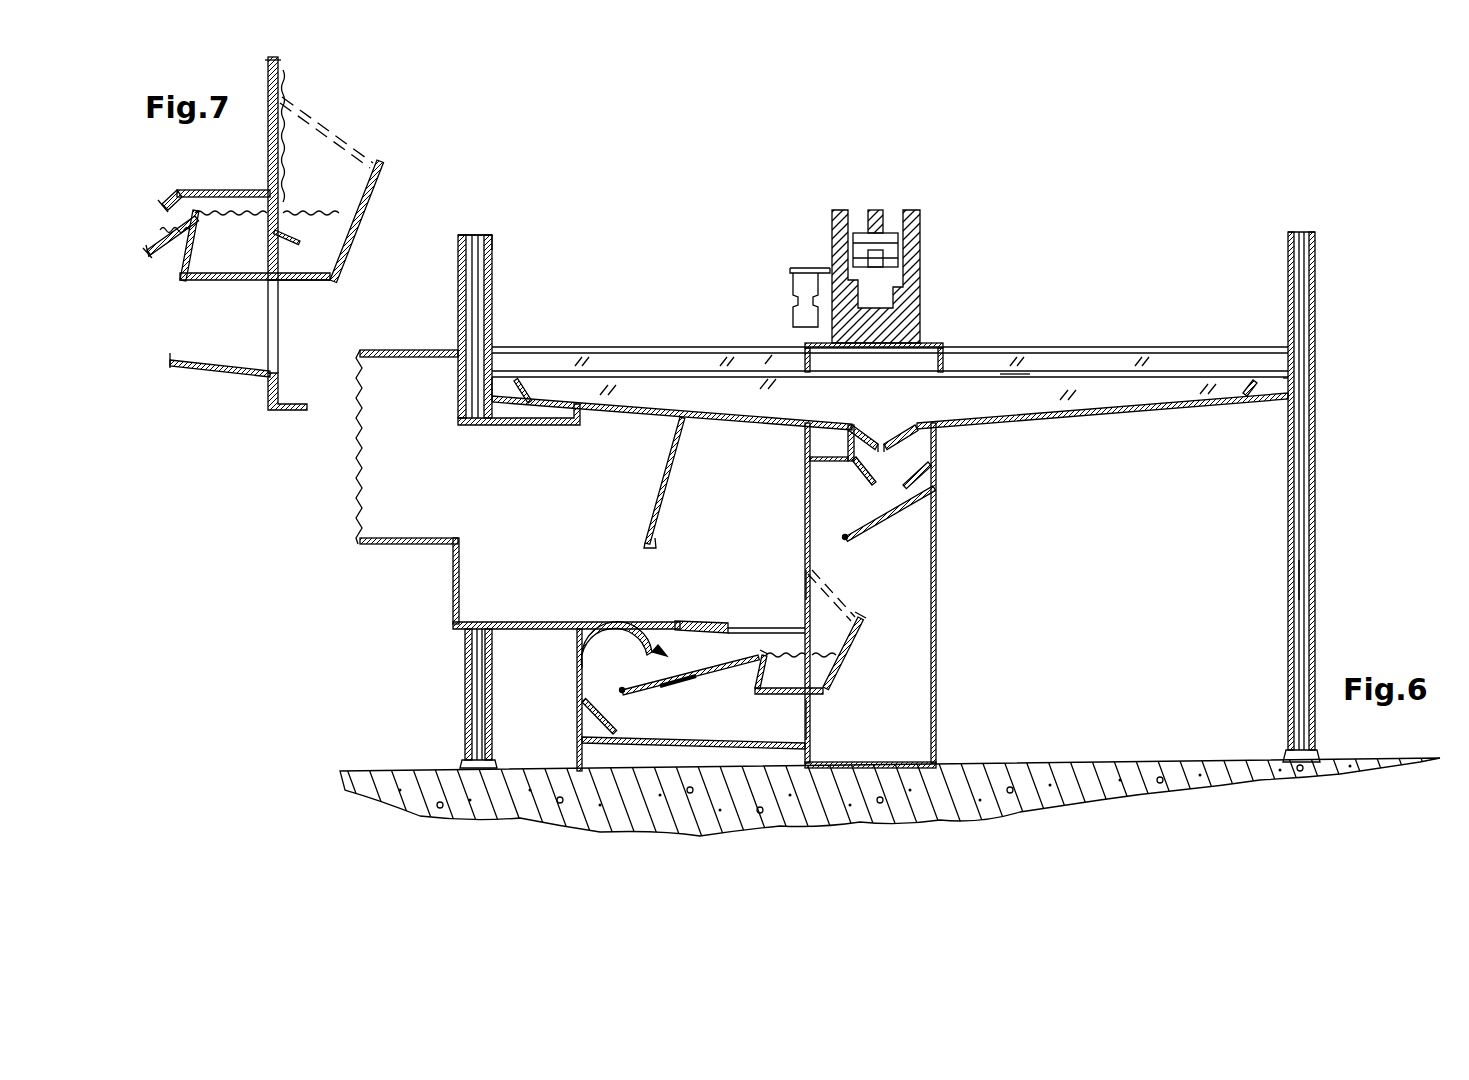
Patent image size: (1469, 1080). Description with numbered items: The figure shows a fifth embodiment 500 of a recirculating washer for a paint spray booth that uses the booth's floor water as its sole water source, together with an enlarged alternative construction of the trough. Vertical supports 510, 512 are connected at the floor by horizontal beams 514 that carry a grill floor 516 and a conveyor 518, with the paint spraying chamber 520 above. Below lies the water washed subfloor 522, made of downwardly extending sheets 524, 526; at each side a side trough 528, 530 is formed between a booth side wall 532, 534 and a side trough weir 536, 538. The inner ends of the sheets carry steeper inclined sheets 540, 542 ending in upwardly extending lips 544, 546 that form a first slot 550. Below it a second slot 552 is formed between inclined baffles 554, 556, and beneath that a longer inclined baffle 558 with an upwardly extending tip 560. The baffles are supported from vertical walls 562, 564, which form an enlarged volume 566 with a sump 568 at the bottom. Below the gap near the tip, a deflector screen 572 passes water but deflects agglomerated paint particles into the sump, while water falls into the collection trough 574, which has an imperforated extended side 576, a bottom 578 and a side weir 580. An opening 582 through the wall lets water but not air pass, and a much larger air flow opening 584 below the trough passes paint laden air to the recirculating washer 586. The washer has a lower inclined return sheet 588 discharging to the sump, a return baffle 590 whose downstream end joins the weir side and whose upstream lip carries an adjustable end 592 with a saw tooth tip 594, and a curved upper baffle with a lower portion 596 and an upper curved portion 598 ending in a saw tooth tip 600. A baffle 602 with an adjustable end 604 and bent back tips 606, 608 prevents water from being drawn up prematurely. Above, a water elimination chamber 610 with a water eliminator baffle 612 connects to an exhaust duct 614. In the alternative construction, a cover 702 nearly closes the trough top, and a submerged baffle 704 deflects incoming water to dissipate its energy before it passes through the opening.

In FIG. 6, the embodiment 500 is at (356, 641).
In FIG. 6, the vertical support 510 is at (477, 298).
In FIG. 6, the vertical support 512 is at (1310, 574).
In FIG. 6, the horizontal beam 514 is at (1107, 356).
In FIG. 6, the grill floor 516 is at (1160, 348).
In FIG. 6, the conveyor 518 is at (926, 236).
In FIG. 6, the paint spraying chamber 520 is at (655, 265).
In FIG. 6, the water washed subfloor 522 is at (1153, 436).
In FIG. 6, the downwardly extending sheet 524 is at (733, 426).
In FIG. 6, the downwardly extending sheet 526 is at (1070, 436).
In FIG. 6, the side trough 528 is at (498, 386).
In FIG. 6, the side trough 530 is at (1266, 390).
In FIG. 6, the booth side wall 532 is at (490, 240).
In FIG. 6, the booth side wall 534 is at (1296, 262).
In FIG. 6, the side trough weir 536 is at (527, 384).
In FIG. 6, the side trough weir 538 is at (1241, 390).
In FIG. 6, the downwardly inclined sheet 540 is at (867, 423).
In FIG. 6, the downwardly inclined sheet 542 is at (1012, 374).
In FIG. 6, the upwardly extending lip 544 is at (883, 430).
In FIG. 6, the upwardly extending lip 546 is at (900, 430).
In FIG. 6, the first gap or slot 550 is at (883, 453).
In FIG. 6, the second slot or gap 552 is at (888, 480).
In FIG. 6, the downwardly inclined baffle 554 is at (803, 491).
In FIG. 6, the downwardly inclined baffle 556 is at (918, 472).
In FIG. 6, the longer downwardly inclined baffle 558 is at (896, 512).
In FIG. 6, the upwardly extending tip 560 is at (843, 538).
In FIG. 7, the vertical wall 562 is at (284, 86).
In FIG. 6, the vertical wall 562 is at (807, 582).
In FIG. 6, the vertical wall 564 is at (936, 590).
In FIG. 6, the enlarged volume 566 is at (927, 658).
In FIG. 7, the sump 568 is at (300, 420).
In FIG. 6, the sump 568 is at (933, 758).
In FIG. 7, the deflector grill or screen 572 is at (312, 112).
In FIG. 6, the deflector grill or screen 572 is at (832, 598).
In FIG. 6, the water collection trough 574 is at (834, 674).
In FIG. 7, the imperforated extended side 576 is at (397, 172).
In FIG. 7, the bottom 578 is at (281, 284).
In FIG. 6, the bottom 578 is at (816, 691).
In FIG. 6, the side weir 580 is at (757, 670).
In FIG. 7, the opening 582 is at (255, 264).
In FIG. 6, the opening 582 is at (800, 668).
In FIG. 7, the air flow opening 584 is at (284, 350).
In FIG. 6, the air flow opening 584 is at (811, 736).
In FIG. 6, the recirculating washer 586 is at (568, 714).
In FIG. 7, the lower inclined return sheet 588 is at (205, 375).
In FIG. 6, the lower inclined return sheet 588 is at (705, 748).
In FIG. 6, the return baffle 590 is at (668, 699).
In FIG. 6, the adjustable end 592 is at (650, 690).
In FIG. 6, the saw tooth tip 594 is at (620, 695).
In FIG. 6, the lower portion 596 is at (576, 736).
In FIG. 6, the upper curved portion 598 is at (646, 646).
In FIG. 6, the saw tooth profile tip 600 is at (636, 654).
In FIG. 6, the baffle 602 is at (660, 644).
In FIG. 6, the adjustable end 604 is at (725, 626).
In FIG. 6, the bent back tip 606 is at (682, 681).
In FIG. 6, the bent back tip 608 is at (762, 655).
In FIG. 6, the water elimination chamber 610 is at (586, 497).
In FIG. 6, the water eliminator baffle 612 is at (650, 508).
In FIG. 6, the exhaust duct 614 is at (434, 453).
In FIG. 7, the cover 702 is at (176, 193).
In FIG. 7, the stop rod 704 is at (303, 242).